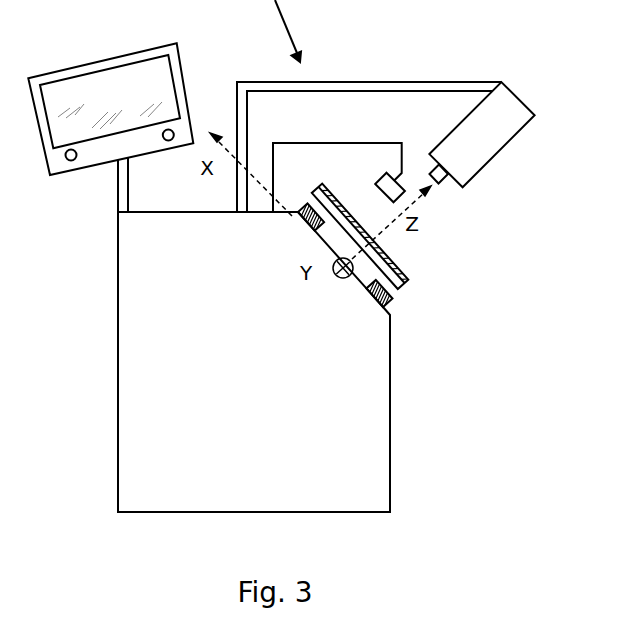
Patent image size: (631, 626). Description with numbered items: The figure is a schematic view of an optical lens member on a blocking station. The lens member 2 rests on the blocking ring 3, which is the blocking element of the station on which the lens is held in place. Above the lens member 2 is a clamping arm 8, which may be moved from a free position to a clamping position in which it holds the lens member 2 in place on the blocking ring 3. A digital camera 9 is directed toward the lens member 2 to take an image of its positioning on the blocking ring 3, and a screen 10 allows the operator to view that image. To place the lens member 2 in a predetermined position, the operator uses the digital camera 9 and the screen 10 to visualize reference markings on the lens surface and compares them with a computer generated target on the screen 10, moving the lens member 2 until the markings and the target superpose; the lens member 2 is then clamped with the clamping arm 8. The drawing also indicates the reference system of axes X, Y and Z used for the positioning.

The lens member 2 is at (404, 275).
The blocking ring 3 is at (391, 297).
The clamping arm 8 is at (375, 143).
The digital camera 9 is at (507, 130).
The screen 10 is at (97, 90).